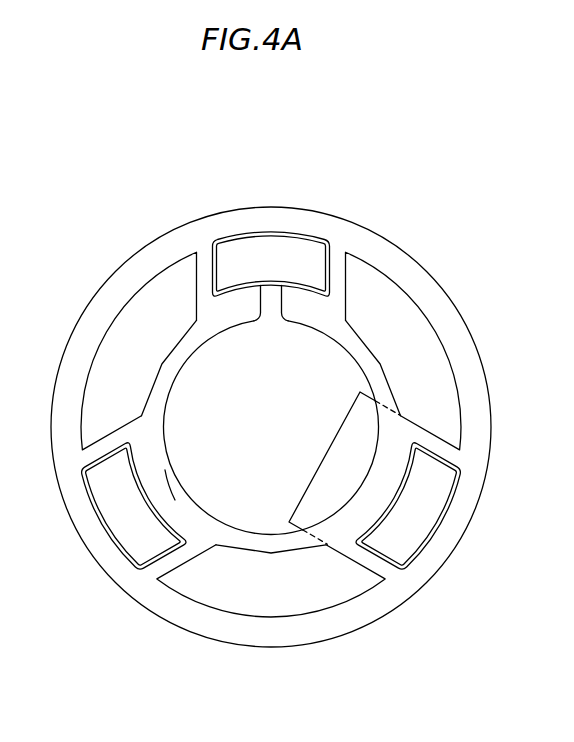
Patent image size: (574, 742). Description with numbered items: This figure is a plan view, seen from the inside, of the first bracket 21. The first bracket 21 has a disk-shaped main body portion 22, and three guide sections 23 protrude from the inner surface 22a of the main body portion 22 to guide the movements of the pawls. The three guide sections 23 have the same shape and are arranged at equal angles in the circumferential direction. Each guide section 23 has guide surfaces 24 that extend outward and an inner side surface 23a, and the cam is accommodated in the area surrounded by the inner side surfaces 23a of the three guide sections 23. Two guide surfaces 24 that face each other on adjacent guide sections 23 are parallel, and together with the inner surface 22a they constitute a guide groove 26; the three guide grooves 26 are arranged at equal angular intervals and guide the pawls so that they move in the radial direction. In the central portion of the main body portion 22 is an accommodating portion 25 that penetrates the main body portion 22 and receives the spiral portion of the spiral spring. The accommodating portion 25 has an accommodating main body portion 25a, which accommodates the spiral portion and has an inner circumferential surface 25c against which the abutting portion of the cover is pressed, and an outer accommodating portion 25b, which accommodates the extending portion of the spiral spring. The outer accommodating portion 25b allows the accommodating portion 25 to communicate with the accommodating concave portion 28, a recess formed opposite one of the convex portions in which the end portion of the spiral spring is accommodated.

The first bracket 21 is at (417, 189).
The main body portion 22 is at (453, 331).
The inner surface 22a is at (473, 368).
The guide section 23 is at (136, 308).
The inner side surface 23a is at (163, 362).
The guide surface 24 is at (199, 268).
The accommodating portion 25 is at (302, 379).
The accommodating main body portion 25a is at (222, 333).
The outer accommodating portion 25b is at (269, 305).
The inner circumferential surface 25c is at (191, 488).
The guide groove 26 is at (326, 451).
The accommodating concave portion 28 is at (263, 247).